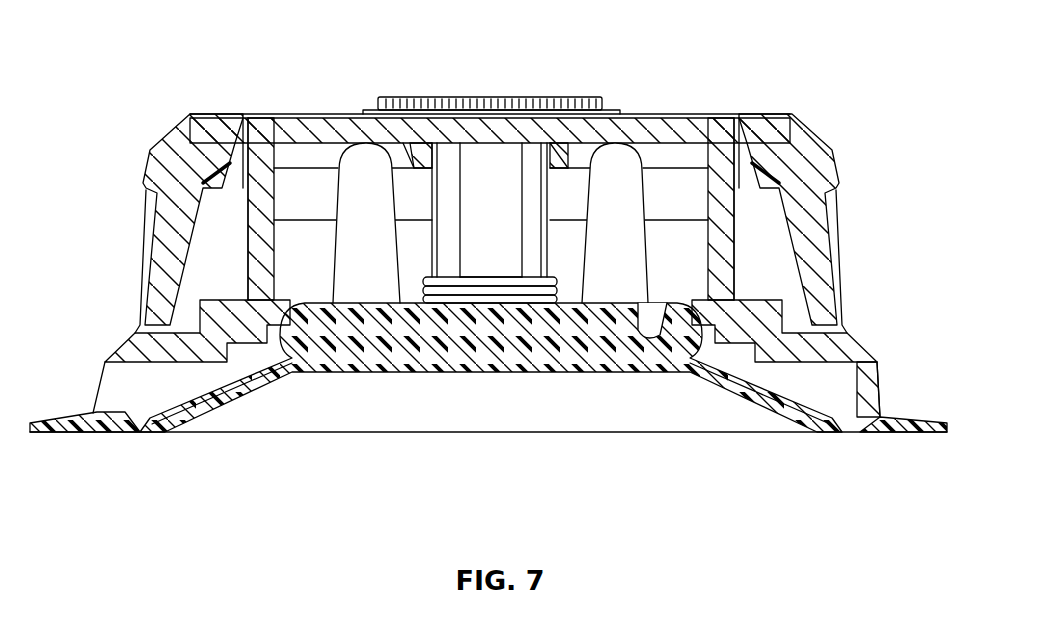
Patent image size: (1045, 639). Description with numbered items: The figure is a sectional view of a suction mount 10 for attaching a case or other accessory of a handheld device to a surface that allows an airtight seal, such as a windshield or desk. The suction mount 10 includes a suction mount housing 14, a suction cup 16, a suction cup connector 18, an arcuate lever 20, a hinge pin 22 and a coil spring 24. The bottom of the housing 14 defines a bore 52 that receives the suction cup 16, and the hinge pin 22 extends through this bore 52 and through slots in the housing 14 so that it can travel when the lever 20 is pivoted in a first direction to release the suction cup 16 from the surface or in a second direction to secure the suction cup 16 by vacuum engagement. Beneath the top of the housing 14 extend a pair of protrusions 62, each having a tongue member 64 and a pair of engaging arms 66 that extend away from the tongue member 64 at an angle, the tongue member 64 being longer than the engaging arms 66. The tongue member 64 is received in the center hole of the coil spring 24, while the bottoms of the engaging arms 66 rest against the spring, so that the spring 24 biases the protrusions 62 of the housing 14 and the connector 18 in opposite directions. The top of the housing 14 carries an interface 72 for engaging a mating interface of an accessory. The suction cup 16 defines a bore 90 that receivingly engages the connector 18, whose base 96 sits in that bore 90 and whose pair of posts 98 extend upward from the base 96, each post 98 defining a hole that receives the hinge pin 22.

The suction mount 10 is at (866, 189).
The suction mount housing 14 is at (120, 350).
The suction cup 16 is at (120, 432).
The suction cup connector 18 is at (683, 190).
The arcuate lever 20 is at (215, 183).
The hinge pin 22 is at (613, 198).
The coil spring 24 is at (488, 312).
The bore 52 is at (712, 258).
The protrusions 62 is at (492, 172).
The tongue member 64 is at (508, 192).
The engaging arms 66 is at (452, 160).
The interface 72 is at (455, 97).
The bore 90 is at (378, 347).
The base 96 is at (625, 343).
The posts 98 is at (367, 176).